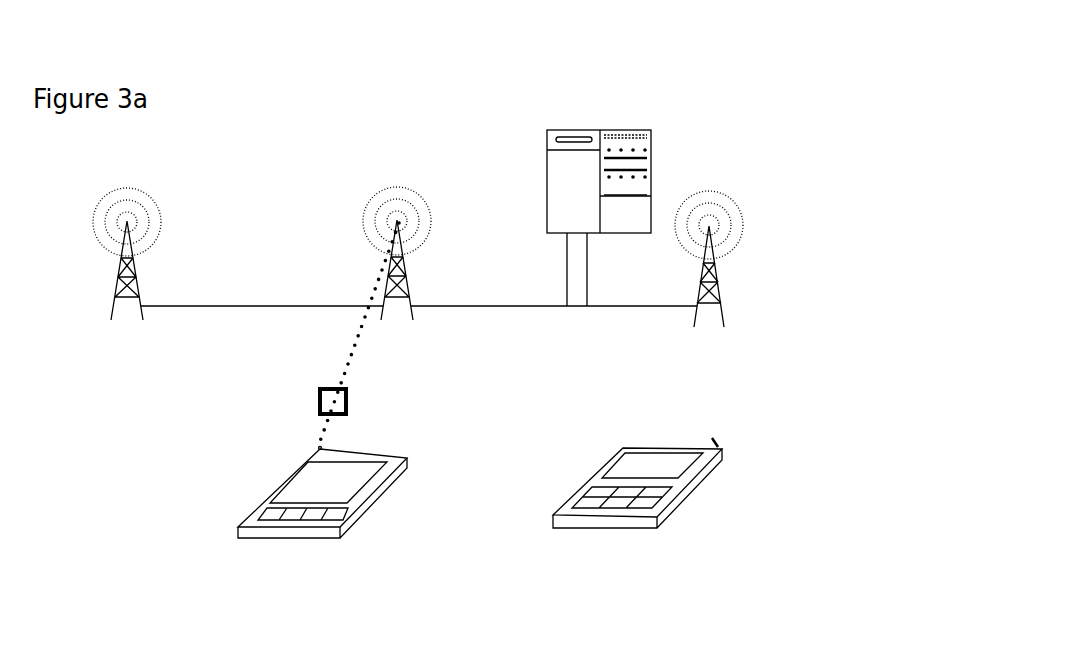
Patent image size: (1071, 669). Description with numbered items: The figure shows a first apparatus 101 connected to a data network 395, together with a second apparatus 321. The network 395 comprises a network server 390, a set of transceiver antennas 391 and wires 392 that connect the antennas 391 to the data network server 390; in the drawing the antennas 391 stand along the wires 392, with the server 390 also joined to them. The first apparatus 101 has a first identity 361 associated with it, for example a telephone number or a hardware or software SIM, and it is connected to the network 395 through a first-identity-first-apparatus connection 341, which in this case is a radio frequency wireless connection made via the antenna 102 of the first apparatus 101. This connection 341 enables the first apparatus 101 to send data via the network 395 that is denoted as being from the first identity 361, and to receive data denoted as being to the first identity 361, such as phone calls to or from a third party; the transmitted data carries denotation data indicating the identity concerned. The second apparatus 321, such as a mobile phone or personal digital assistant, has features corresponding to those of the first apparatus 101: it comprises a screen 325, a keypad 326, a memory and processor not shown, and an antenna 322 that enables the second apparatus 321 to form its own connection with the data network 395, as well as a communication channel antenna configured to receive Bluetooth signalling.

The first apparatus 101 is at (247, 552).
The antenna 102 is at (320, 448).
The second apparatus 321 is at (699, 495).
The antenna 322 is at (716, 440).
The display 325 is at (676, 472).
The keypad 326 is at (645, 503).
The first-identity-first-apparatus connection 341 is at (345, 365).
The first identity 361 is at (318, 400).
The network server 390 is at (561, 176).
The transceiver antennas 391 is at (380, 190).
The wires 392 is at (240, 305).
The network 395 is at (618, 100).